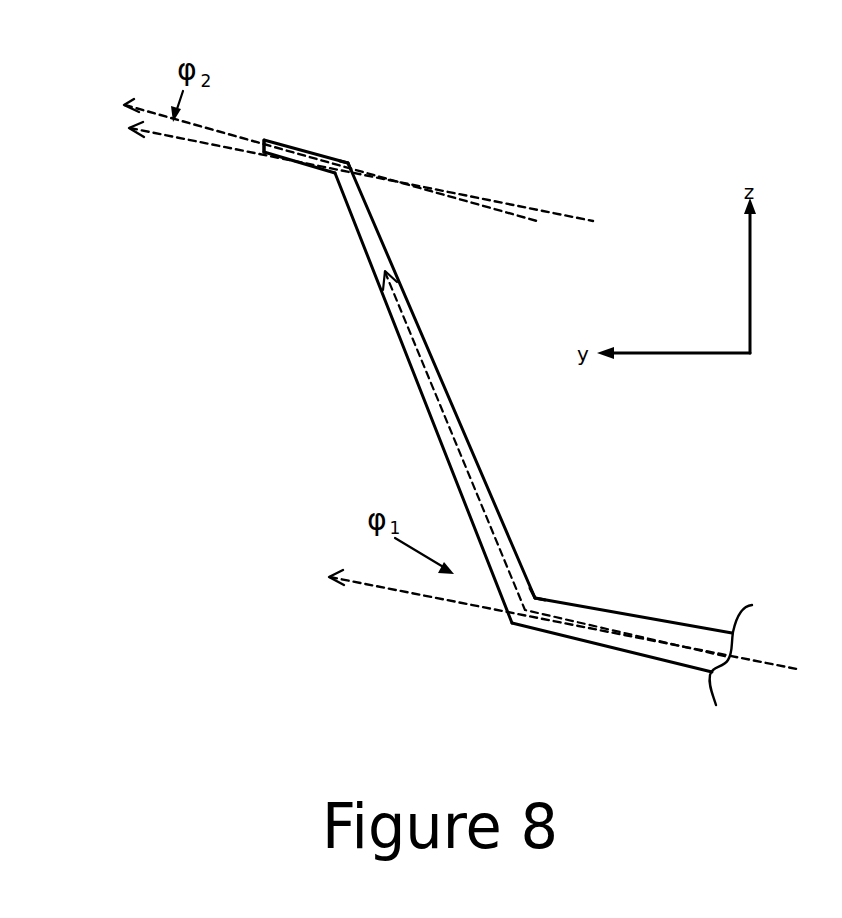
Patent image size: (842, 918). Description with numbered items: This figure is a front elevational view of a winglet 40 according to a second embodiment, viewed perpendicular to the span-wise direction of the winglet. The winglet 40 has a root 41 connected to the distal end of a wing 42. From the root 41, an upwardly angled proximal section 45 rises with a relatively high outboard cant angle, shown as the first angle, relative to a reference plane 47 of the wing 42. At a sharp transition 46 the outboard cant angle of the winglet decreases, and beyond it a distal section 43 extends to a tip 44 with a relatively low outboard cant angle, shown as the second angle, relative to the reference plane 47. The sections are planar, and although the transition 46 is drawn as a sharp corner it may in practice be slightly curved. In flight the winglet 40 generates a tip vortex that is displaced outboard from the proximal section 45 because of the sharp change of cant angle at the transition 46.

The winglet 40 is at (340, 358).
The root 41 is at (535, 598).
The wing 42 is at (620, 646).
The distal section 43 is at (303, 163).
The tip 44 is at (265, 153).
The proximal section 45 is at (430, 423).
The transition 46 is at (348, 163).
The reference plane 47 is at (443, 410).